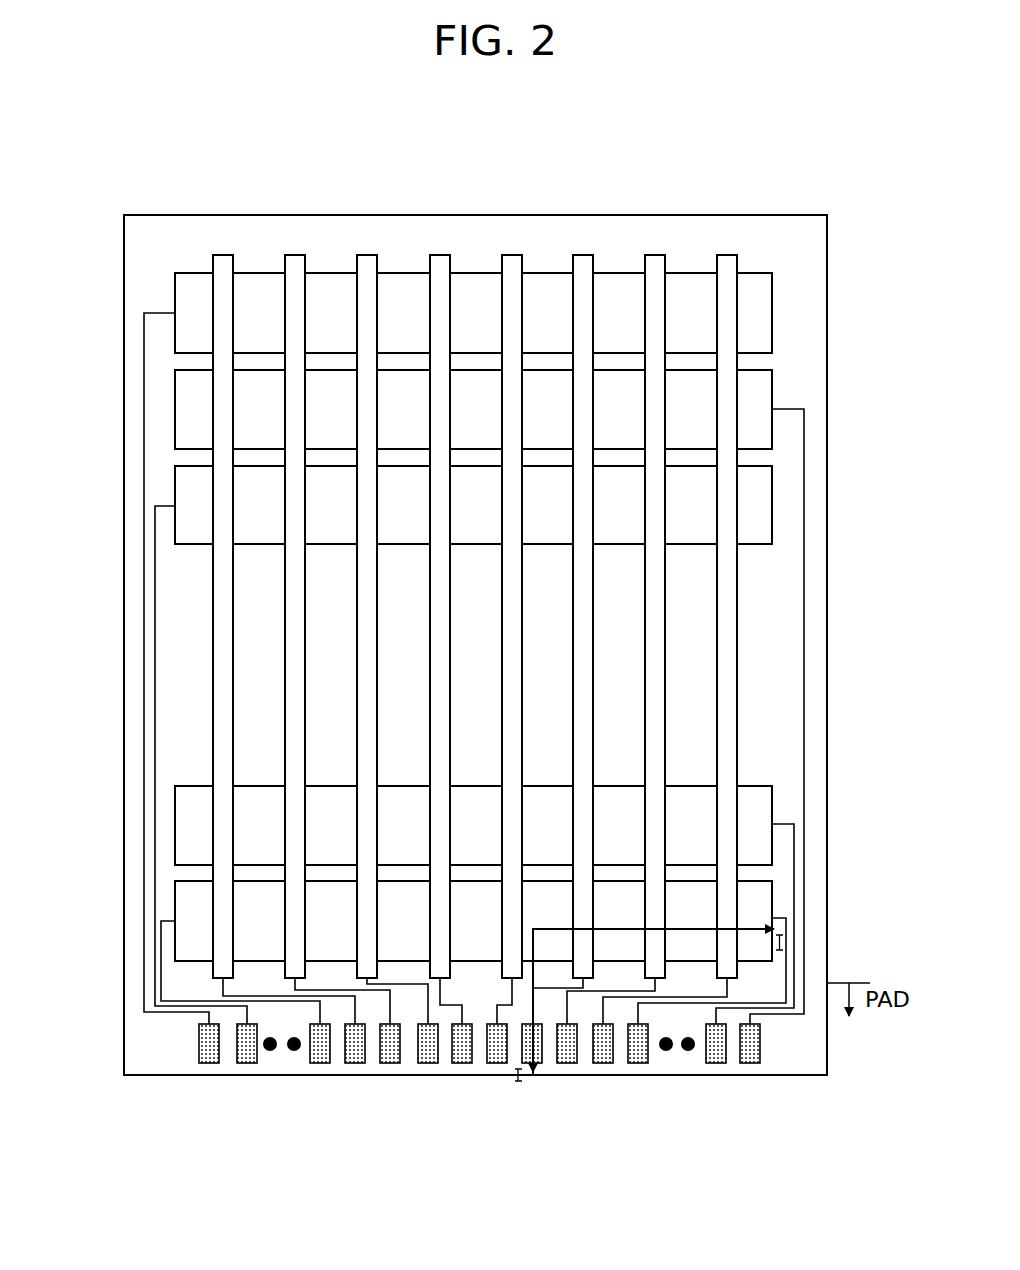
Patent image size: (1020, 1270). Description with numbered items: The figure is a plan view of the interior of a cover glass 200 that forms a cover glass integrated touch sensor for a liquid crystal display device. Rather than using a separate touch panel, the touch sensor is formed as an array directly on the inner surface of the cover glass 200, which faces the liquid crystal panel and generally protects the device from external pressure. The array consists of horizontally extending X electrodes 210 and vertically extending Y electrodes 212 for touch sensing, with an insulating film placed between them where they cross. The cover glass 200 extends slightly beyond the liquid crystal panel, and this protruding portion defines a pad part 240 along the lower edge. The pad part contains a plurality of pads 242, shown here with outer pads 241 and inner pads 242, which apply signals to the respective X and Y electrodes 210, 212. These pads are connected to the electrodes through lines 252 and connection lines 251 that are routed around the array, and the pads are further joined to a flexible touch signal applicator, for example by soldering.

The cover glass 200 is at (808, 1043).
The X electrodes 210 is at (772, 313).
The Y electrodes 212 is at (722, 254).
The pad portion 240 is at (697, 1146).
The first pads 241 is at (318, 1063).
The pads 242 is at (601, 1063).
The first connection lines 251 is at (144, 993).
The lines 252 is at (508, 991).